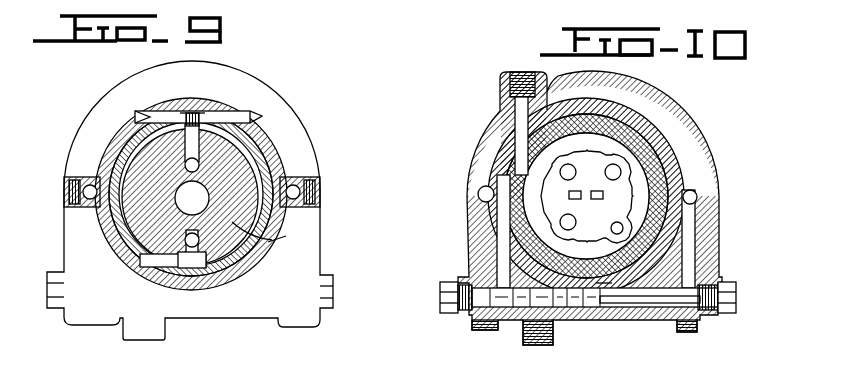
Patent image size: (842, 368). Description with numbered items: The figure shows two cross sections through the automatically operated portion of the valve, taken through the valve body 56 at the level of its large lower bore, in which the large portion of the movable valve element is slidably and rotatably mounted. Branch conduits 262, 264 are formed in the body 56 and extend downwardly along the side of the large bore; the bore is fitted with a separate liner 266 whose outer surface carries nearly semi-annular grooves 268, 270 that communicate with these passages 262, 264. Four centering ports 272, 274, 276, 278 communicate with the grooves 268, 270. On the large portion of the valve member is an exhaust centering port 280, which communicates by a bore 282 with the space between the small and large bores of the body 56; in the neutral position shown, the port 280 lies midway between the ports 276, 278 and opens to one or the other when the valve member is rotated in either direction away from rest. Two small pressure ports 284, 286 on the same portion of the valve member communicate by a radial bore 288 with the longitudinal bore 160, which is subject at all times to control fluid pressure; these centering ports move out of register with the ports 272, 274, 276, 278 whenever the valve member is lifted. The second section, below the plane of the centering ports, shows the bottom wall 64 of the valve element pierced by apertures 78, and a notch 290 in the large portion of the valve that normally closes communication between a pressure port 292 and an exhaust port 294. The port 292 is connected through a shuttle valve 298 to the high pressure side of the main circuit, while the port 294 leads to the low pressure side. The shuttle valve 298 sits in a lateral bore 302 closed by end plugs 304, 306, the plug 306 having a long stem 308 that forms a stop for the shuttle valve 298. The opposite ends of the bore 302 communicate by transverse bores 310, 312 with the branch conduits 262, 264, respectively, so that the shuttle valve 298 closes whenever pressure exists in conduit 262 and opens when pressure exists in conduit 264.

In FIG. 9, the body 56 is at (114, 247).
In FIG. 10, the body 56 is at (682, 150).
In FIG. 10, the bottom wall 64 is at (586, 196).
In FIG. 10, the apertures 78 is at (572, 173).
In FIG. 9, the longitudinal bore 160 is at (262, 122).
In FIG. 9, the branch conduit 262 is at (303, 178).
In FIG. 10, the branch conduit 262 is at (698, 197).
In FIG. 9, the branch conduit 264 is at (85, 176).
In FIG. 10, the branch conduit 264 is at (478, 193).
In FIG. 9, the liner 266 is at (288, 237).
In FIG. 10, the liner 266 is at (603, 280).
In FIG. 9, the semi-annular groove 268 is at (292, 143).
In FIG. 9, the semi-annular groove 270 is at (152, 116).
In FIG. 9, the centering port 272 is at (247, 105).
In FIG. 9, the centering port 274 is at (150, 110).
In FIG. 9, the centering port 276 is at (143, 278).
In FIG. 9, the centering port 278 is at (221, 260).
In FIG. 9, the exhaust centering port 280 is at (200, 272).
In FIG. 9, the bore 282 is at (248, 233).
In FIG. 9, the pressure port 284 is at (218, 106).
In FIG. 9, the pressure port 286 is at (184, 110).
In FIG. 9, the radial bore 288 is at (195, 108).
In FIG. 10, the notch 290 is at (527, 196).
In FIG. 10, the pressure port 292 is at (517, 229).
In FIG. 10, the exhaust port 294 is at (518, 158).
In FIG. 10, the shuttle valve 298 is at (532, 319).
In FIG. 10, the lateral bore 302 is at (618, 310).
In FIG. 10, the end plug 304 is at (439, 299).
In FIG. 10, the end plug 306 is at (737, 297).
In FIG. 10, the stem 308 is at (657, 305).
In FIG. 10, the transverse bore 310 is at (487, 257).
In FIG. 10, the transverse bore 312 is at (693, 239).